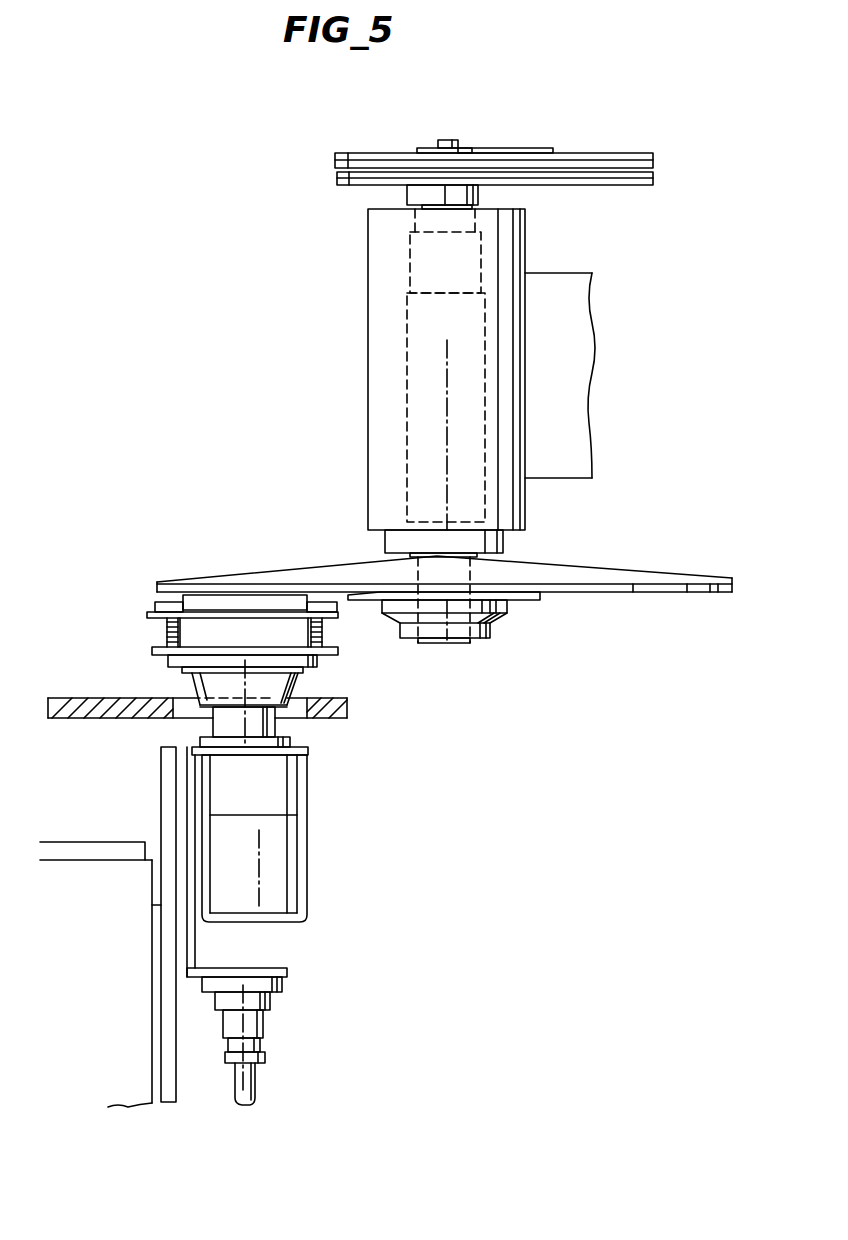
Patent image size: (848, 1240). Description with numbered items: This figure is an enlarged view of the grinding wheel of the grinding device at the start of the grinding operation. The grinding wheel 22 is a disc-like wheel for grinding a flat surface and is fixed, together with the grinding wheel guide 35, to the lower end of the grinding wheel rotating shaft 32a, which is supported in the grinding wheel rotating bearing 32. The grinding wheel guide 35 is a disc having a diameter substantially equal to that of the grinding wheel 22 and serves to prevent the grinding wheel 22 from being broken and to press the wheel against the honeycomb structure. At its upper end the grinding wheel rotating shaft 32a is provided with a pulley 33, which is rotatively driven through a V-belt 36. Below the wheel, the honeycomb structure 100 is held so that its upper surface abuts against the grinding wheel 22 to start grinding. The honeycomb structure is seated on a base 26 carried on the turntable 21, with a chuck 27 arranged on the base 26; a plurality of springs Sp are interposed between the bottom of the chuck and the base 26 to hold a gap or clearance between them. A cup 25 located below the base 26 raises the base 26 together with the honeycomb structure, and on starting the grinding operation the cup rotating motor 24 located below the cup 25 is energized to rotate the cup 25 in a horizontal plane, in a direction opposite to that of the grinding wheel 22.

The pulley 33 is at (378, 153).
The V-belt 36 is at (627, 153).
The grinding wheel rotating bearing 32 is at (368, 367).
The grinding wheel rotating shaft 32a is at (455, 641).
The grinding wheel guide 35 is at (643, 568).
The grinding wheel 22 is at (444, 585).
The honeycomb structure 100 is at (218, 600).
The chuck 27 is at (155, 602).
The springs Sp is at (165, 632).
The base 26 is at (320, 661).
The cup 25 is at (296, 683).
The turntable 21 is at (332, 719).
The cup rotating motor 24 is at (293, 845).